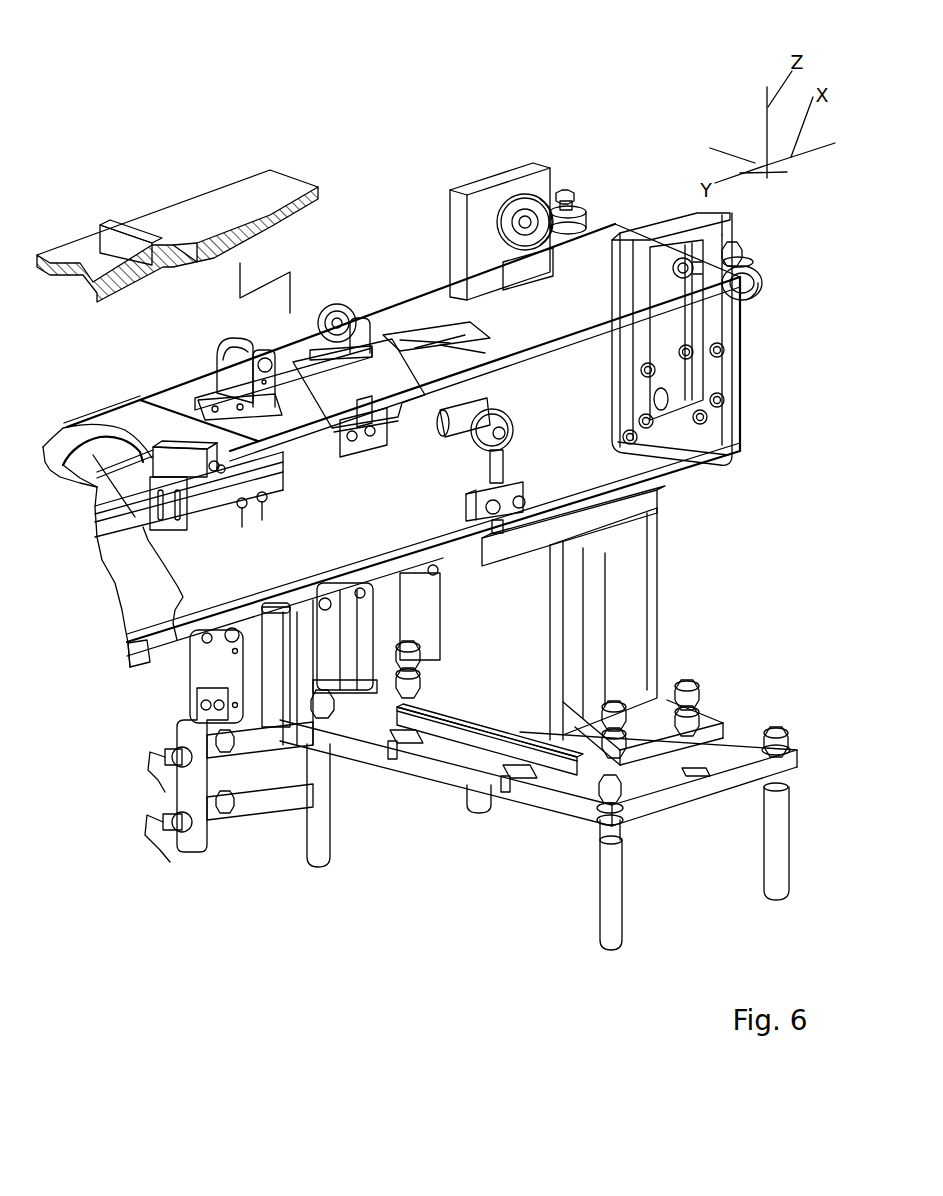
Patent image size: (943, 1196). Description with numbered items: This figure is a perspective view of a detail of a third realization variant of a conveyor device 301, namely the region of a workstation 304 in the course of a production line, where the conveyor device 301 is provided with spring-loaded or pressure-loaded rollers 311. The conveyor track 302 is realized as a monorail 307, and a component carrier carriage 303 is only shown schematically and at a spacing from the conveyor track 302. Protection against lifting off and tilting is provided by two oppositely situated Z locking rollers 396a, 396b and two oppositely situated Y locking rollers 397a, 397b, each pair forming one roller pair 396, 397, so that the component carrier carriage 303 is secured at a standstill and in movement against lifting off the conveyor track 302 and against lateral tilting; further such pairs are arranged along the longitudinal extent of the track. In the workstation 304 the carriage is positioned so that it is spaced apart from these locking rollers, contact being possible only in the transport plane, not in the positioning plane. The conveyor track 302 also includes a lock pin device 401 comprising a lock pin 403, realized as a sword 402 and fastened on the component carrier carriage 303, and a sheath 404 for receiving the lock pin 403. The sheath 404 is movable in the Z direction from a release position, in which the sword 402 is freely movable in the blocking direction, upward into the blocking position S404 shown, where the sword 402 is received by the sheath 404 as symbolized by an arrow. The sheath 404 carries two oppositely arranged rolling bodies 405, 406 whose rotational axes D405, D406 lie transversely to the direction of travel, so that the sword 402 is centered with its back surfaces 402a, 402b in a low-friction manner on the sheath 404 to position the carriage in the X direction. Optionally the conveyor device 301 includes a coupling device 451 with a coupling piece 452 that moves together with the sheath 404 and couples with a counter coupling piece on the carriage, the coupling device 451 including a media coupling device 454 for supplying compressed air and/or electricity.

The conveyor device 301 is at (172, 105).
The conveyor track 302 is at (648, 125).
The component carrier carriage 303 is at (285, 160).
The workstation 304 is at (222, 78).
The monorail 307 is at (695, 92).
The rollers 311 is at (567, 440).
The roller pair 396 is at (532, 140).
The Z locking roller 396a is at (517, 200).
The Z locking roller 396b is at (645, 226).
The roller pair 397 is at (753, 305).
The Y locking roller 397a is at (600, 215).
The Y locking roller 397b is at (752, 285).
The lock pin device 401 is at (427, 163).
The sword 402 is at (211, 205).
The lock pin 403 is at (190, 208).
The back surface 402a is at (198, 272).
The back surface 402b is at (325, 212).
The sheath 404 is at (347, 287).
The rolling body 405 is at (232, 340).
The rolling body 406 is at (411, 223).
The coupling device 451 is at (383, 246).
The media coupling device 454 is at (383, 246).
The coupling piece 452 is at (450, 649).
The rotational axis D405 is at (153, 366).
The rotational axis D406 is at (480, 350).
The blocking position S404 is at (197, 361).